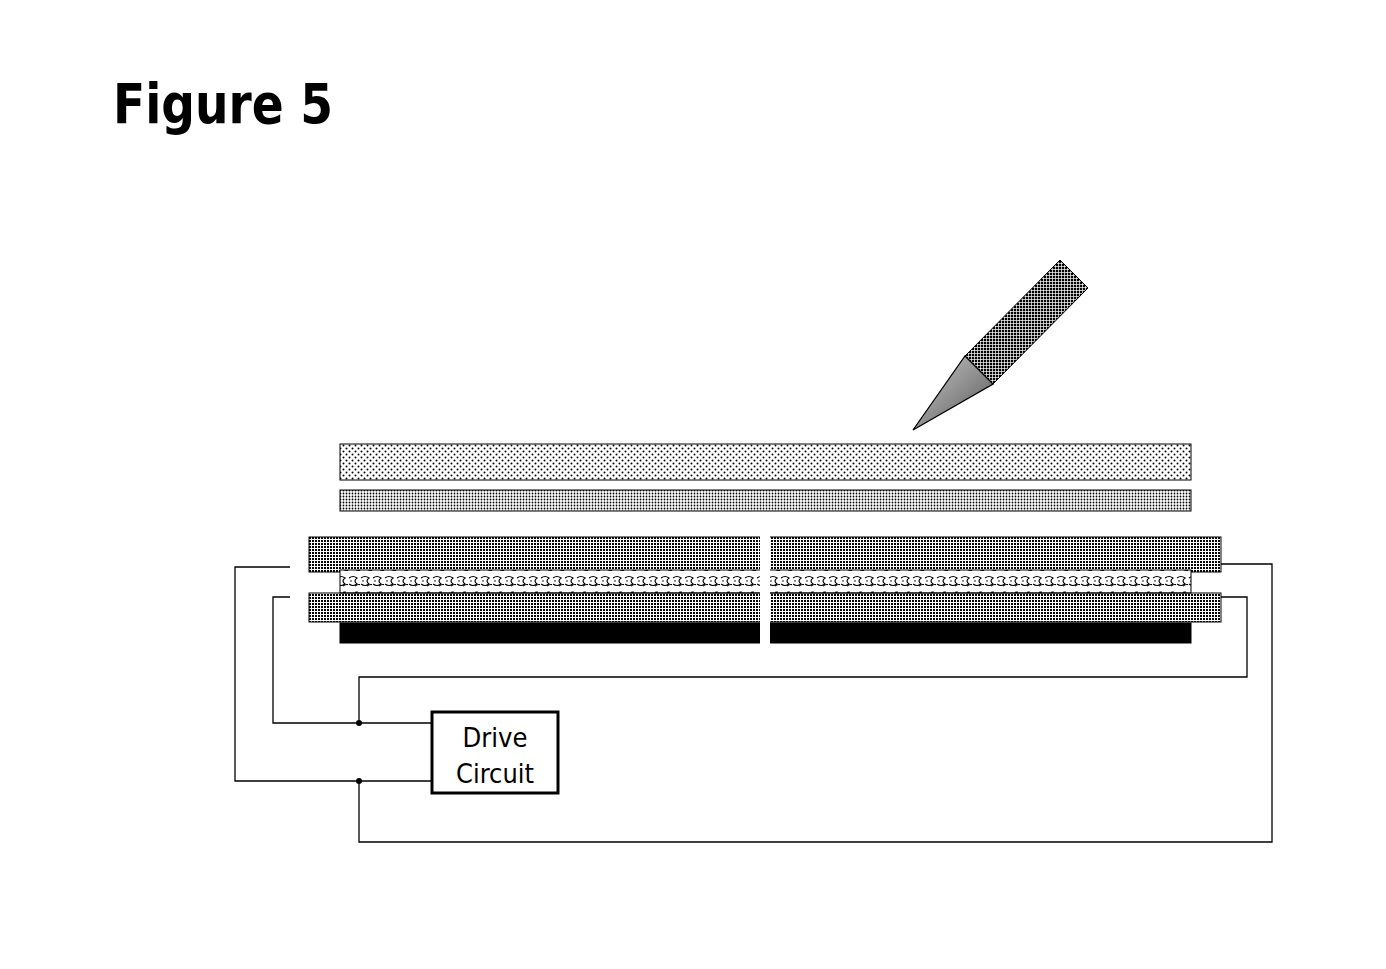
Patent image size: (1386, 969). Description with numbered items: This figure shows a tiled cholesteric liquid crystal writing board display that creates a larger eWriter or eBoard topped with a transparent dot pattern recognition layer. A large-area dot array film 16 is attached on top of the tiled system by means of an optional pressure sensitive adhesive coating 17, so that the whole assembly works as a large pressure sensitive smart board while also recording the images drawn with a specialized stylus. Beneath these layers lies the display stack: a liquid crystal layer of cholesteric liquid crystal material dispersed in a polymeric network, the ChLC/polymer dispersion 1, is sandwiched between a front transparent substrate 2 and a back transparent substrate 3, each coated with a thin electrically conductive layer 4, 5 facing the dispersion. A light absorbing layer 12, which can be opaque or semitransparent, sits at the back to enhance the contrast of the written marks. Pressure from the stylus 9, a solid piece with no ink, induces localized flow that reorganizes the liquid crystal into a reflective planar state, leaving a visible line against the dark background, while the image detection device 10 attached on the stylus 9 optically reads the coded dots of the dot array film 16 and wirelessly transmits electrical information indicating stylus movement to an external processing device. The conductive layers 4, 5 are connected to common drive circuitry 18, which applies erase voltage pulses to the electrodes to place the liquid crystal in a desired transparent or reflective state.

The ChLC/polymer dispersion 1 is at (1194, 581).
The front transparent substrate 2 is at (1224, 545).
The back transparent substrate 3 is at (1224, 617).
The electrically conductive layer 4 is at (288, 567).
The electrically conductive layer 5 is at (288, 597).
The stylus 9 is at (919, 384).
The image detection device 10 is at (1010, 301).
The light absorbing layer 12 is at (320, 636).
The dot array film 16 is at (386, 438).
The pressure sensitive adhesive coating 17 is at (1194, 499).
The drive circuitry 18 is at (815, 703).